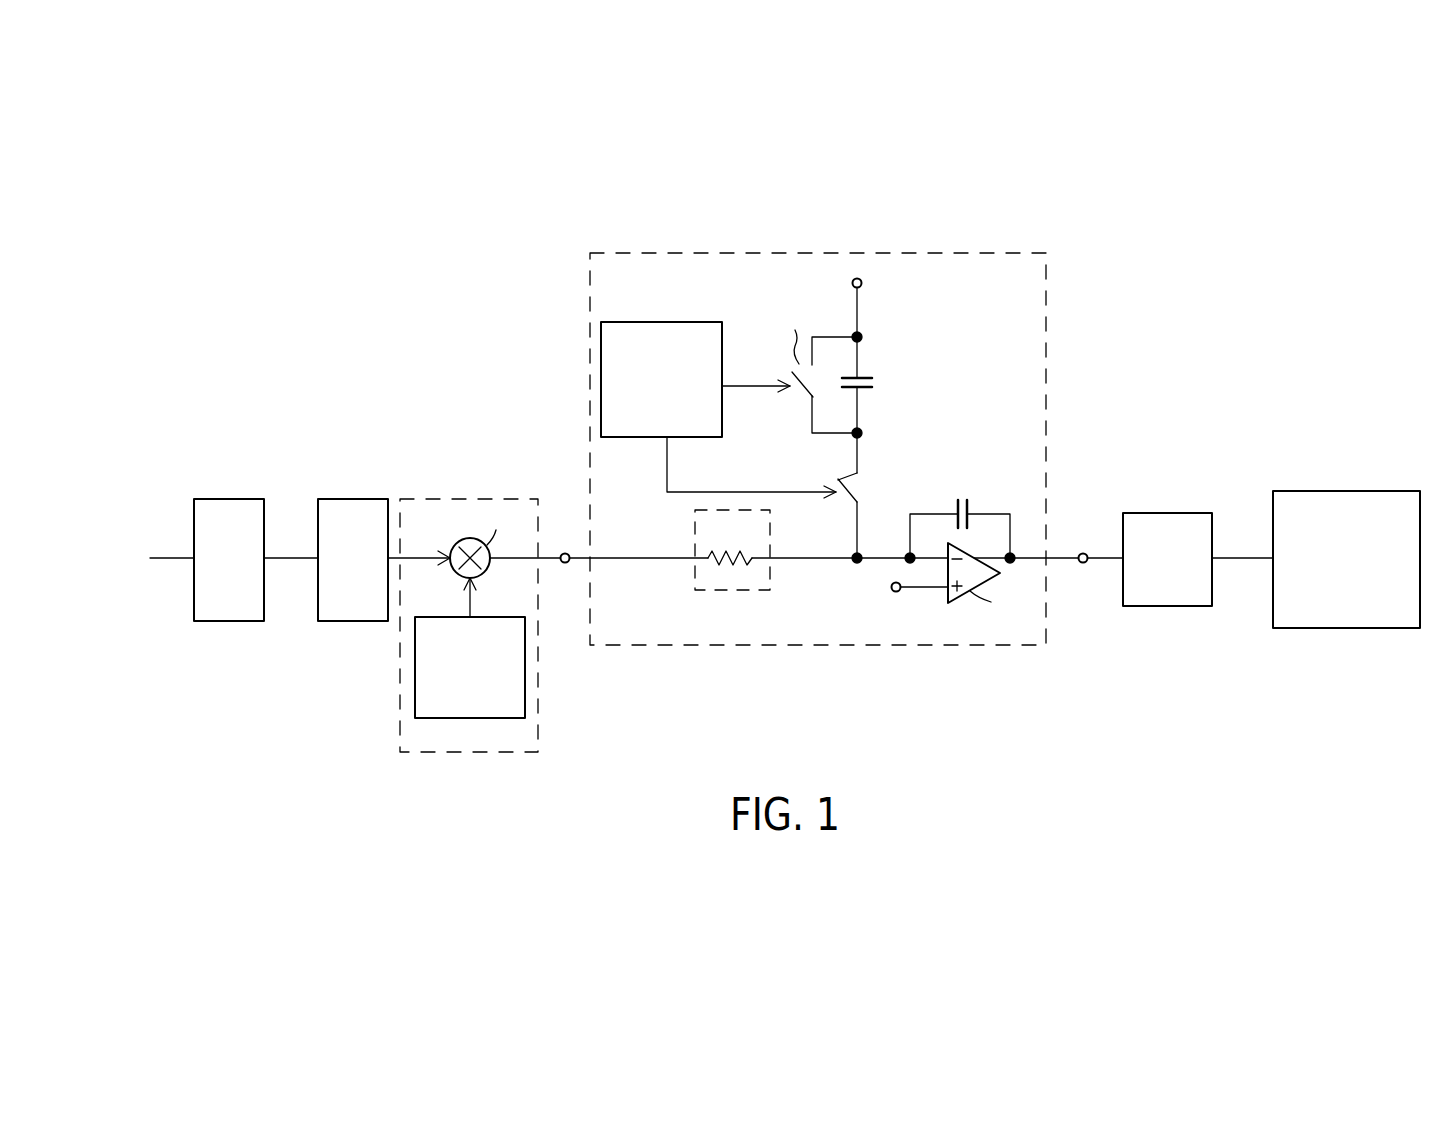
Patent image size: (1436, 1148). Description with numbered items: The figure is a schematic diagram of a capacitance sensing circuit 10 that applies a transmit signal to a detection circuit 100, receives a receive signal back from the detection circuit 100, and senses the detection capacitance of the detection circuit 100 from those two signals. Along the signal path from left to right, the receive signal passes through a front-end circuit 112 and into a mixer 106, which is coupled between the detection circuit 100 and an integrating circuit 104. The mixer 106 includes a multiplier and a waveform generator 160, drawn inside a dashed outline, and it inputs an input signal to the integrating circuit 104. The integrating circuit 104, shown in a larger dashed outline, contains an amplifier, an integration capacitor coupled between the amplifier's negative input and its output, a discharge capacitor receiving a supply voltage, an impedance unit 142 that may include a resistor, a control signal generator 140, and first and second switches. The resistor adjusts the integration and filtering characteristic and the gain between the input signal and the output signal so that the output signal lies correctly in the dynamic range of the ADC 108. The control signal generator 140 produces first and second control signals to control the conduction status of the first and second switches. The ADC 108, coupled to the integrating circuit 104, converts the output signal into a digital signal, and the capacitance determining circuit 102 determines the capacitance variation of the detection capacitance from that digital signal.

The capacitance sensing circuit 10 is at (1240, 238).
The detection circuit 100 is at (229, 499).
The capacitance determining circuit 102 is at (1346, 491).
The integrating circuit 104 is at (1046, 325).
The mixer 106 is at (437, 499).
The analog-to-digital convertor (ADC) 108 is at (1166, 513).
The front-end circuit 112 is at (351, 499).
The control signal generator 140 is at (630, 437).
The impedance unit 142 is at (695, 583).
The waveform generator 160 is at (415, 673).